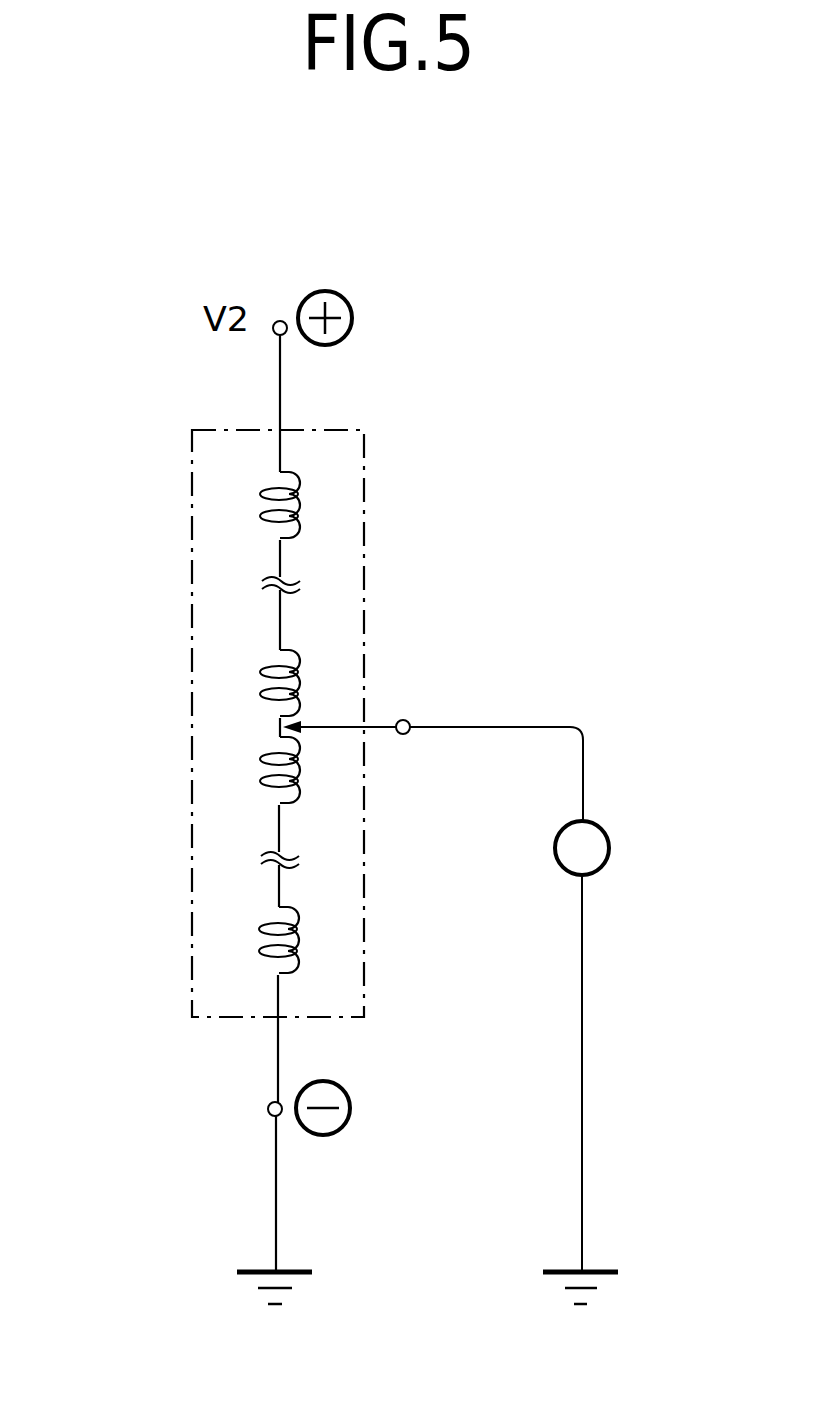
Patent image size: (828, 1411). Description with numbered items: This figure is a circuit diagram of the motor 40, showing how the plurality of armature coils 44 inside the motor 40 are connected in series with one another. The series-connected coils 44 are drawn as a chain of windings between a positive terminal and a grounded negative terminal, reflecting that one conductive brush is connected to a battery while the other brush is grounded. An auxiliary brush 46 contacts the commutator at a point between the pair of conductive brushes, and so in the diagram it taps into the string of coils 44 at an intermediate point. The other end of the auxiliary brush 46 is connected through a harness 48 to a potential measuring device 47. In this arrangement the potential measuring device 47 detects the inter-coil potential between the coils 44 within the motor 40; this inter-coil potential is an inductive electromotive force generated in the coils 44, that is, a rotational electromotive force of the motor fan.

The motor 40 is at (150, 516).
The armature coils 44 is at (300, 507).
The auxiliary brush 46 is at (335, 727).
The potential measuring device 47 is at (597, 821).
The harness 48 is at (575, 727).